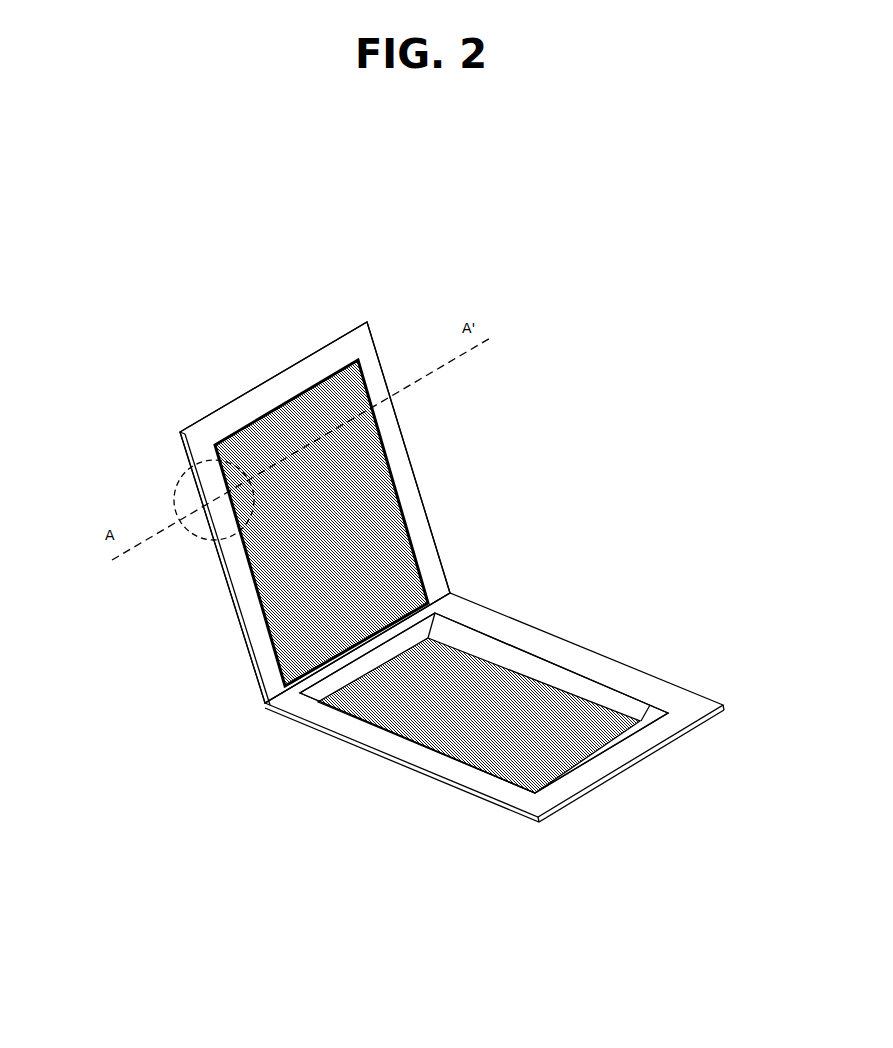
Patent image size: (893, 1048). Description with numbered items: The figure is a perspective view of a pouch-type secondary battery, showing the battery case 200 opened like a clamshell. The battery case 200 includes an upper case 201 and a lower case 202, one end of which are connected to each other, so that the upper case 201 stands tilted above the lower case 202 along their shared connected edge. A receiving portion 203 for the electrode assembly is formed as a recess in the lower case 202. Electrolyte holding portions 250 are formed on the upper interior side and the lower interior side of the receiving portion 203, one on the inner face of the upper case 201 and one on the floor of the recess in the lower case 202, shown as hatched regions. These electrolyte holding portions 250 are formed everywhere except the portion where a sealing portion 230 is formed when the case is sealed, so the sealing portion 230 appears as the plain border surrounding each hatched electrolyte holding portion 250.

The battery case 200 is at (123, 349).
The upper case 201 is at (162, 607).
The lower case 202 is at (610, 642).
The receiving portion 203 is at (383, 713).
The sealing portion 230 is at (417, 527).
The electrolyte holding portion 250 is at (367, 480).